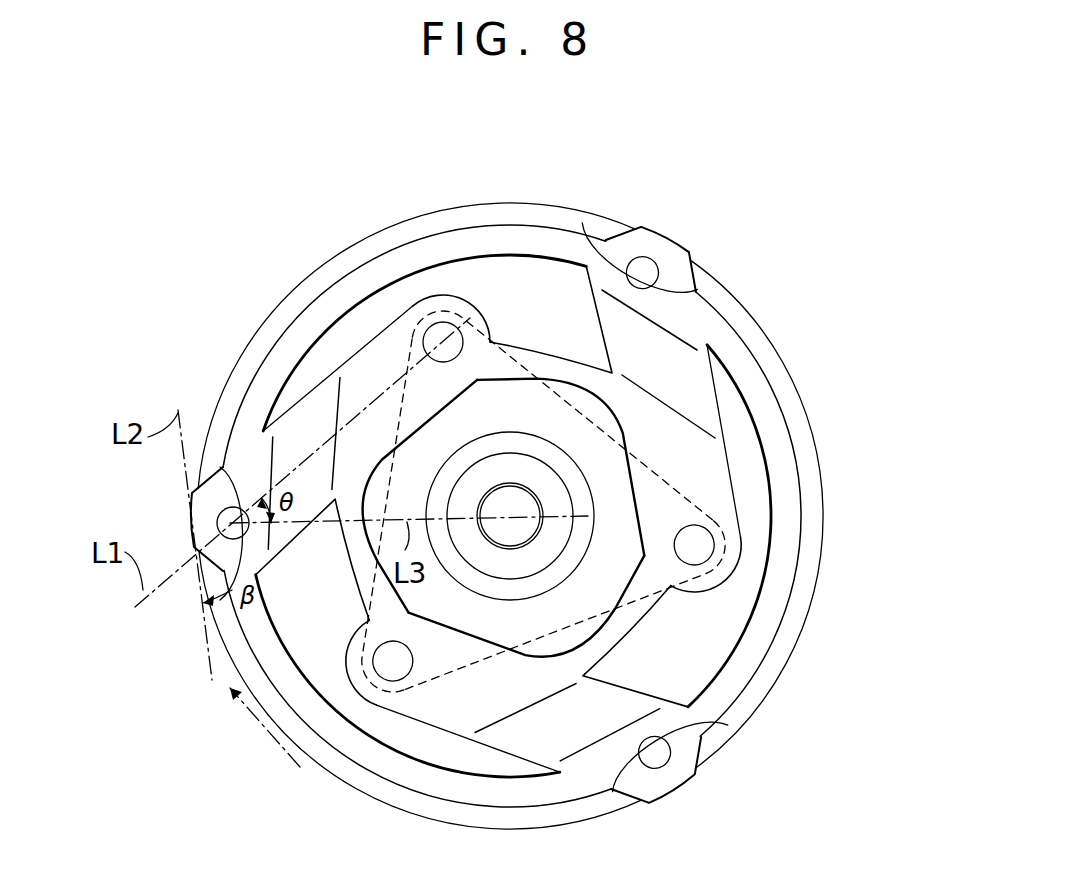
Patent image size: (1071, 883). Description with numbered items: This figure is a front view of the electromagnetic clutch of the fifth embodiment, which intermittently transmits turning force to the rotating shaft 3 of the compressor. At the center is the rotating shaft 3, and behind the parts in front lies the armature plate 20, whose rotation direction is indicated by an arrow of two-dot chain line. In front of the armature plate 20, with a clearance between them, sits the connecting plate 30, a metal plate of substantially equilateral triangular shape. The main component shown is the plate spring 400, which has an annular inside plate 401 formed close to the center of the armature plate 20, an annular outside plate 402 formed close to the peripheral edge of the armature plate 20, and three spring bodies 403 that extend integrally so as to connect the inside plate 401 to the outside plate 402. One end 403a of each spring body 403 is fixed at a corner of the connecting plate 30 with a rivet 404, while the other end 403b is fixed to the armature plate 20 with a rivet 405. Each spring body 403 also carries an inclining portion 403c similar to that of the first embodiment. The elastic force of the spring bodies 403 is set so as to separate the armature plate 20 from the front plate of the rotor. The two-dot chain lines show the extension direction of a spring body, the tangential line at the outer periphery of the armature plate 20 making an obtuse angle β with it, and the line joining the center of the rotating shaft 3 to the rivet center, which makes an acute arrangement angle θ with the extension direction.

The rotating shaft 3 is at (532, 522).
The armature plate 20 is at (747, 710).
The connecting plate 30 is at (577, 627).
The plate spring 400 is at (478, 501).
The inside plate 401 is at (480, 363).
The outside plate 402 is at (760, 383).
The spring body 403 is at (370, 345).
The one end of spring body 403a is at (443, 300).
The other end of spring body 403b is at (660, 247).
The inclining portion 403c is at (297, 410).
The rivet 404 is at (452, 330).
The rivet 405 is at (648, 275).